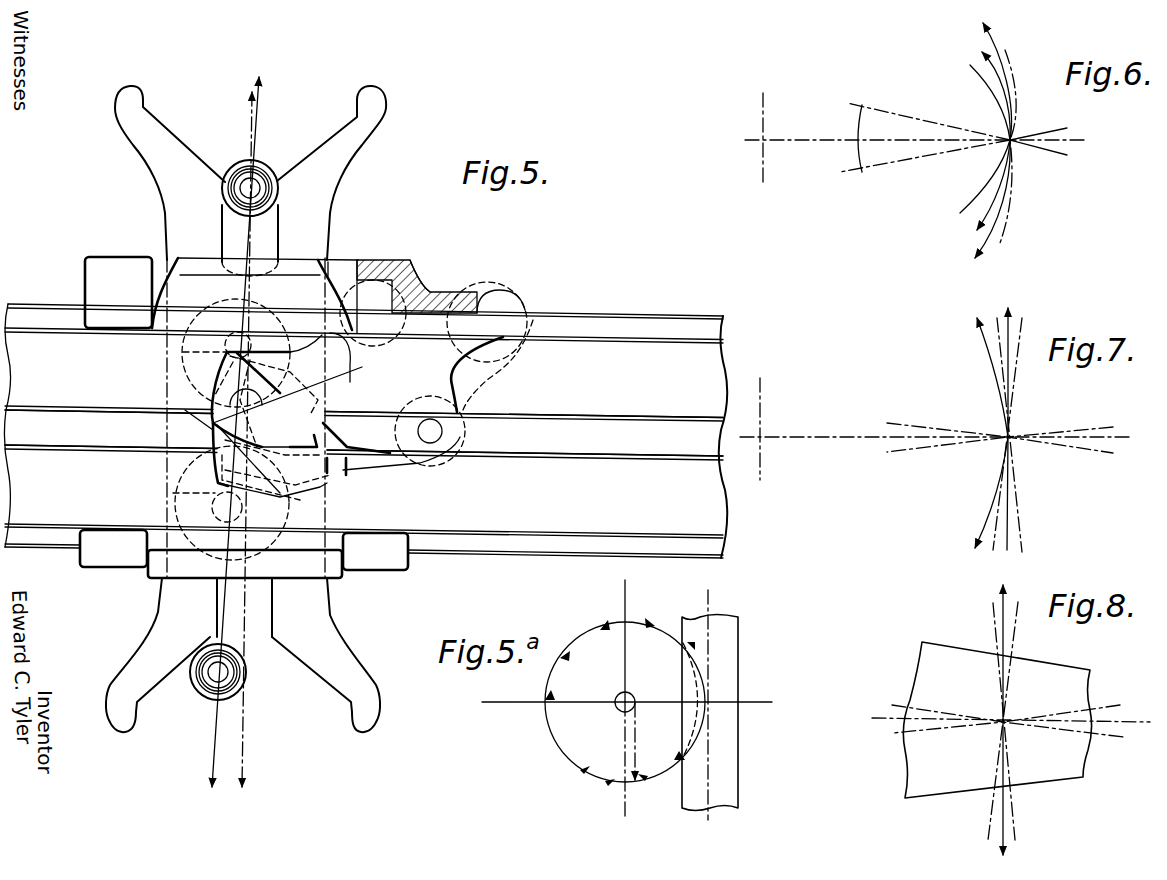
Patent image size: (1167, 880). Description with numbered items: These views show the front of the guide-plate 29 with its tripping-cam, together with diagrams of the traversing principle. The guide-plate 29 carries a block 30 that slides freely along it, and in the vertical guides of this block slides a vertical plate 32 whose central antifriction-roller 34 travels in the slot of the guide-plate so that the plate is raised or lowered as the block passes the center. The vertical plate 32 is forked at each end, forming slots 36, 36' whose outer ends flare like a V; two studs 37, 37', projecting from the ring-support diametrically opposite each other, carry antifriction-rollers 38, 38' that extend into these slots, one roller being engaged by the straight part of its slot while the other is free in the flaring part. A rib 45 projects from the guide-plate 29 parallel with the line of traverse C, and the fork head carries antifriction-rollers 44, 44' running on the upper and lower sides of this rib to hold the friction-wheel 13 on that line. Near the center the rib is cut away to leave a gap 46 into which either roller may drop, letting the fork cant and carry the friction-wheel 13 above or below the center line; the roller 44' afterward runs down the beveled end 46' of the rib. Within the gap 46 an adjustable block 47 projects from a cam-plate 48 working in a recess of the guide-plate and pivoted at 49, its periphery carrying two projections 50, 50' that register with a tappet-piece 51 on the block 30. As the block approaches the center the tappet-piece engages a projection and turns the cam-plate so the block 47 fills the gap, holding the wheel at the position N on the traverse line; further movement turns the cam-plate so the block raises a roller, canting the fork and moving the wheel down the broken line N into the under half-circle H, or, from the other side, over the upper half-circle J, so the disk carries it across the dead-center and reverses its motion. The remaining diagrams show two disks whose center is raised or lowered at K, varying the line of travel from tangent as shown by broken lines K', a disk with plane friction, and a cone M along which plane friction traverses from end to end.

In FIG. 5a, the friction-wheel 13 is at (728, 658).
In FIG. 5, the guide-plate 29 is at (365, 431).
In FIG. 5, the block 30 is at (343, 600).
In FIG. 5, the vertical plate 32 is at (300, 224).
In FIG. 5, the antifriction-roller 34 is at (233, 363).
In FIG. 5, the slot 36 is at (200, 240).
In FIG. 5, the slot 36' is at (244, 607).
In FIG. 5, the stud 37 is at (261, 174).
In FIG. 5, the stud 37' is at (245, 677).
In FIG. 5, the antifriction-roller 38 is at (239, 177).
In FIG. 5, the antifriction-roller 38' is at (203, 691).
In FIG. 5, the antifriction-roller 44 is at (176, 350).
In FIG. 5, the antifriction-roller 44' is at (169, 495).
In FIG. 5, the rib 45 is at (364, 433).
In FIG. 5, the gap 46 is at (168, 398).
In FIG. 5, the beveled end 46' is at (391, 473).
In FIG. 5, the adjustable block 47 is at (268, 429).
In FIG. 5, the cam-plate 48 is at (431, 366).
In FIG. 5, the pivot 49 is at (435, 438).
In FIG. 5, the projection 50 is at (490, 319).
In FIG. 5, the projection 50' is at (408, 285).
In FIG. 5, the tappet-piece 51 is at (453, 292).
In FIG. 5a, the upper half-circle J is at (604, 607).
In FIG. 5a, the under half-circle H is at (610, 801).
In FIG. 5a, the line of traverse C is at (623, 704).
In FIG. 5a, the center position line N is at (647, 728).
In FIG. 6, the disk center positions K is at (913, 134).
In FIG. 6, the lines of travel K' is at (978, 140).
In FIG. 8, the cone M is at (997, 720).